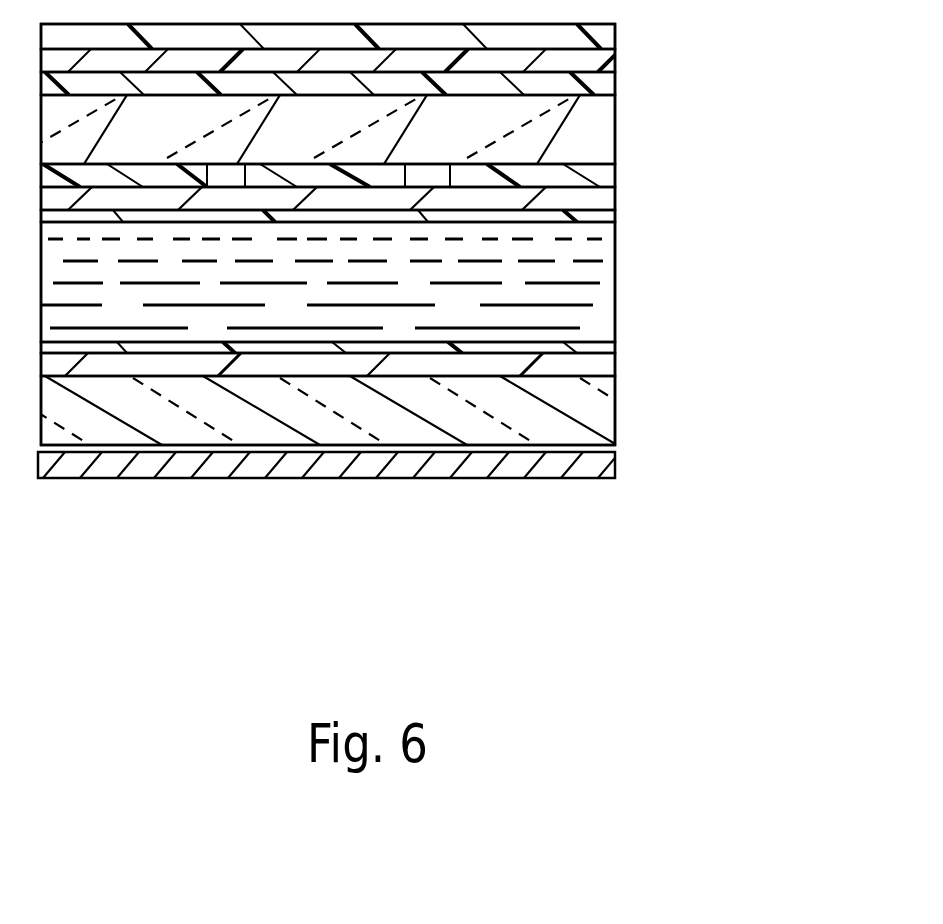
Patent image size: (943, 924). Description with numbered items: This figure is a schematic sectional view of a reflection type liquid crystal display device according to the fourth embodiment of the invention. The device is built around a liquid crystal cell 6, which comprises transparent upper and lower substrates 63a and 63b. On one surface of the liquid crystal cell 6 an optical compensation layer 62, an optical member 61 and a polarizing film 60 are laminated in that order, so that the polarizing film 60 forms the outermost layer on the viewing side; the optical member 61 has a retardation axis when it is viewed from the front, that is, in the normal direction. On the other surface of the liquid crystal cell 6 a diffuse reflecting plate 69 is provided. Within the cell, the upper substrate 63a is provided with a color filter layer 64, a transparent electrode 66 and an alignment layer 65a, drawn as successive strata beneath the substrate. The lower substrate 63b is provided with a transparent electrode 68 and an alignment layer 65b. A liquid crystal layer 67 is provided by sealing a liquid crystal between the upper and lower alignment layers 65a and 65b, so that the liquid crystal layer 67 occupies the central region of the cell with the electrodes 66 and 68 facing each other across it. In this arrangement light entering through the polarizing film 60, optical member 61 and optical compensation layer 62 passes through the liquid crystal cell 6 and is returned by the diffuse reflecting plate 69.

The liquid crystal cell 6 is at (806, 114).
The polarizing film 60 is at (615, 37).
The optical member 61 is at (615, 67).
The optical compensation layer 62 is at (615, 85).
The upper substrate 63a is at (615, 133).
The color filter layer 64 is at (615, 178).
The transparent electrode 66 is at (615, 198).
The alignment layer 65a is at (615, 222).
The liquid crystal layer 67 is at (615, 278).
The alignment layer 65b is at (615, 350).
The transparent electrode 68 is at (615, 368).
The lower substrate 63b is at (615, 420).
The diffuse reflecting plate 69 is at (615, 470).